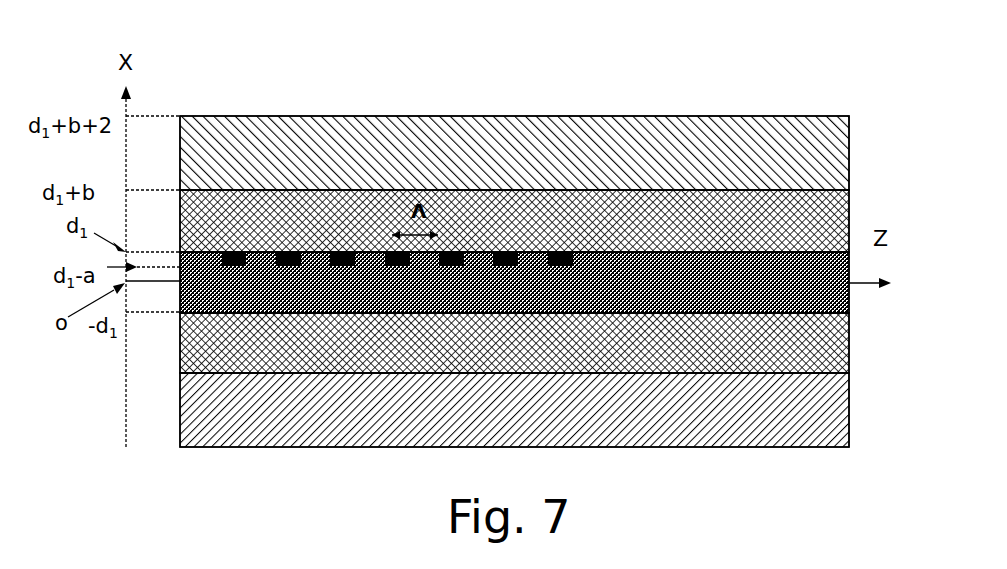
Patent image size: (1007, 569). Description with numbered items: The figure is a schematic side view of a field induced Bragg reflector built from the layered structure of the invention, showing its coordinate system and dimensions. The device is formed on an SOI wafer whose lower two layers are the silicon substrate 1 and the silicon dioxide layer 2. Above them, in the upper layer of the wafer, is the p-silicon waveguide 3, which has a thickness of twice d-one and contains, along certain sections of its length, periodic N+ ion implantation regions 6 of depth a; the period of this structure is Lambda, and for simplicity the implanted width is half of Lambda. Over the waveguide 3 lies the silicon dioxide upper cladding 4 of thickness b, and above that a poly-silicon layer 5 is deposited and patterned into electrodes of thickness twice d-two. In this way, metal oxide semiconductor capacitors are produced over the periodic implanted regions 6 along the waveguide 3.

The silicon substrate 1 is at (848, 419).
The silicon dioxide layer 2 is at (848, 357).
The p-silicon waveguide 3 is at (848, 307).
The silicon dioxide upper cladding 4 is at (848, 212).
The poly-silicon layer 5 is at (848, 130).
The periodic N+ ion implantation regions 6 is at (397, 149).